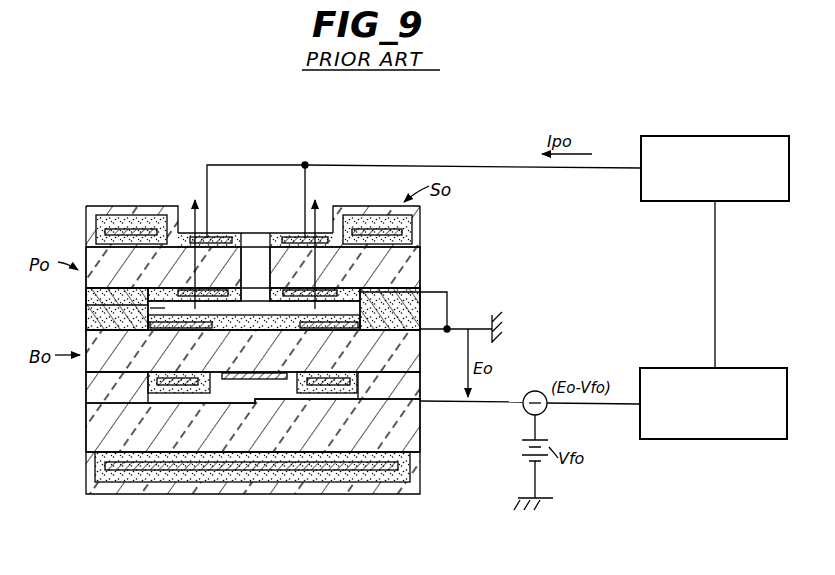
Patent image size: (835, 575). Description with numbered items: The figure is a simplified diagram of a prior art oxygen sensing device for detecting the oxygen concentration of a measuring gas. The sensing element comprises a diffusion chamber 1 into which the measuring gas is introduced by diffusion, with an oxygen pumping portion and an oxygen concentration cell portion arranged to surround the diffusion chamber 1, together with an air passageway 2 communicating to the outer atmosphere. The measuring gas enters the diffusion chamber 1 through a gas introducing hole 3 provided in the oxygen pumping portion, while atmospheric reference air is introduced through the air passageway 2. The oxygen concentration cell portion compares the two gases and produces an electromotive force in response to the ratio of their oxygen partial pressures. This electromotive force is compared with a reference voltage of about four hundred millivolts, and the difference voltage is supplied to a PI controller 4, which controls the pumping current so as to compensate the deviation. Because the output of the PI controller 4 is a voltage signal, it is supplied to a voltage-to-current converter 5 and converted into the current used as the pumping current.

The diffusion chamber 1 is at (86, 318).
The air passageway 2 is at (239, 398).
The gas introducing hole 3 is at (270, 258).
The PI controller 4 is at (712, 440).
The voltage-to-current (V/I) converter 5 is at (716, 136).